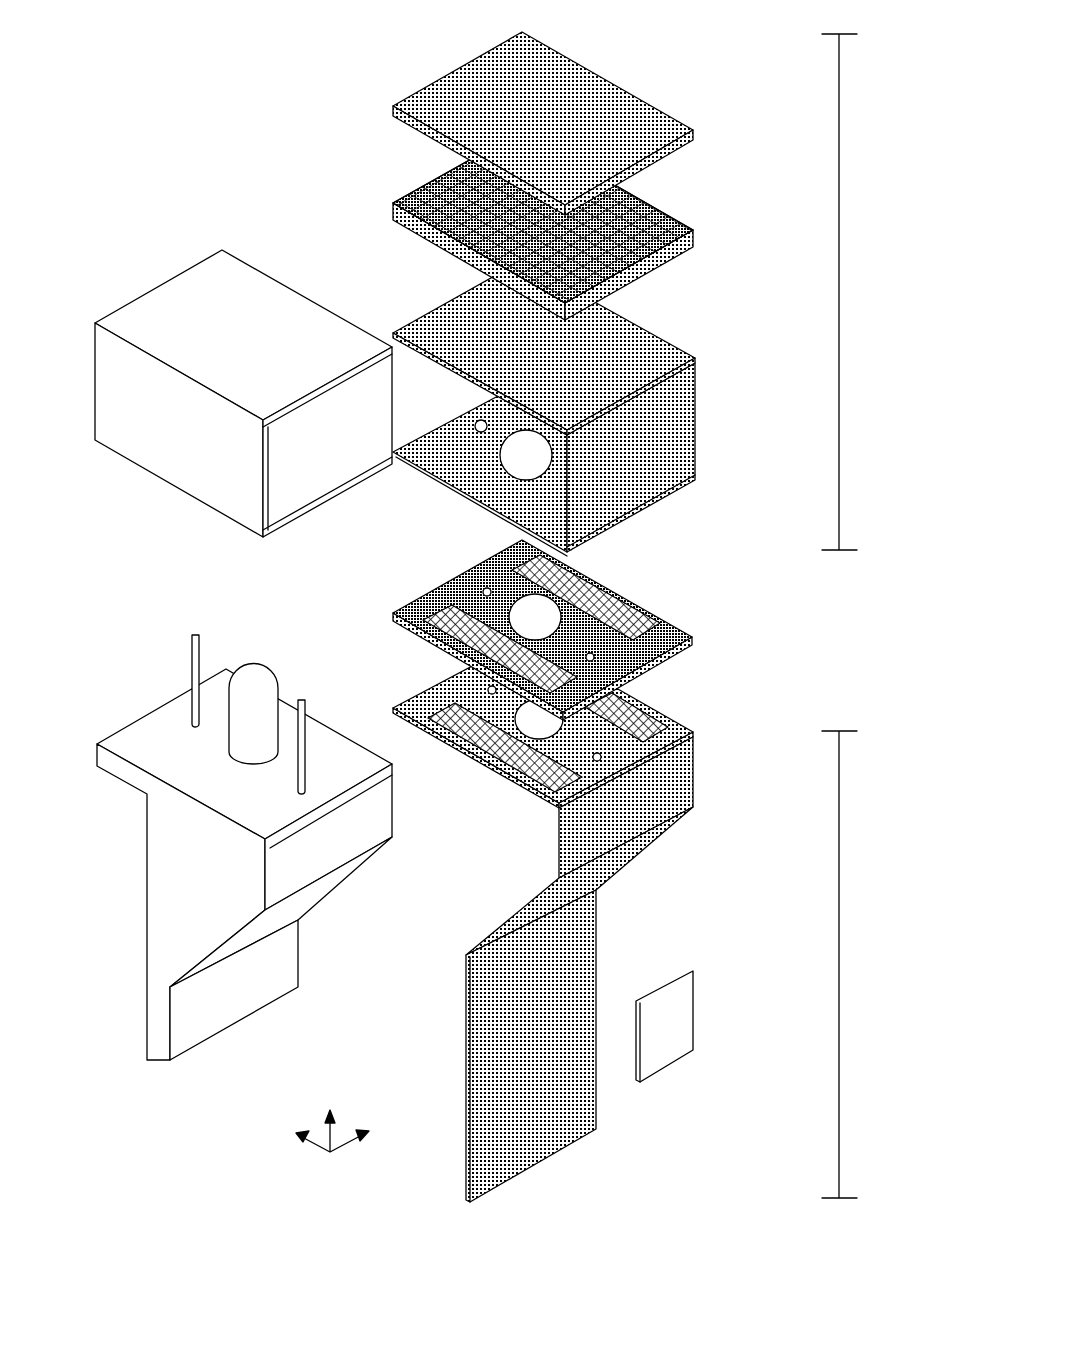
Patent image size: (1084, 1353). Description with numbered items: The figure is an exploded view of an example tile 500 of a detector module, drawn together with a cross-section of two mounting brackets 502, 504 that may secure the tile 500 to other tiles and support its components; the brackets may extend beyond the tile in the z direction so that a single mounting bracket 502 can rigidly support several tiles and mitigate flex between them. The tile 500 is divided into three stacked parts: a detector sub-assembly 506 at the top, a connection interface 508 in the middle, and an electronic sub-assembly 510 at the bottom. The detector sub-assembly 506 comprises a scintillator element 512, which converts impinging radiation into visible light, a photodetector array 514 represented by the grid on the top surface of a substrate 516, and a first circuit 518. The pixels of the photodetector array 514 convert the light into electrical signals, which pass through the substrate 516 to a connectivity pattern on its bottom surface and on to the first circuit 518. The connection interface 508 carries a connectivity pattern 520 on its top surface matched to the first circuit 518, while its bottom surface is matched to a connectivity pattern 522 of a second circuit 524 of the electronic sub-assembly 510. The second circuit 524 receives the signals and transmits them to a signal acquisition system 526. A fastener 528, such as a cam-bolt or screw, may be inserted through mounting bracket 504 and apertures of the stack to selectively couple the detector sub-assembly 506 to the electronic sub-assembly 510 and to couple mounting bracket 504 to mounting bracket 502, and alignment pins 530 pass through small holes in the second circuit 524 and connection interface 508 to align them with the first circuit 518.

The tile 500 is at (211, 43).
The mounting bracket 502 is at (175, 274).
The mounting bracket 504 is at (168, 703).
The detector sub-assembly 506 is at (839, 287).
The connection interface 508 is at (693, 639).
The electronic sub-assembly 510 is at (839, 968).
The scintillator element 512 is at (458, 68).
The photodetector array 514 is at (428, 183).
The substrate 516 is at (700, 239).
The first circuit 518 is at (700, 408).
The connectivity pattern 520 is at (587, 594).
The connectivity pattern 522 is at (647, 700).
The second circuit 524 is at (694, 773).
The signal acquisition system 526 is at (694, 1002).
The fastener 528 is at (265, 664).
The alignment pins 530 is at (201, 636).